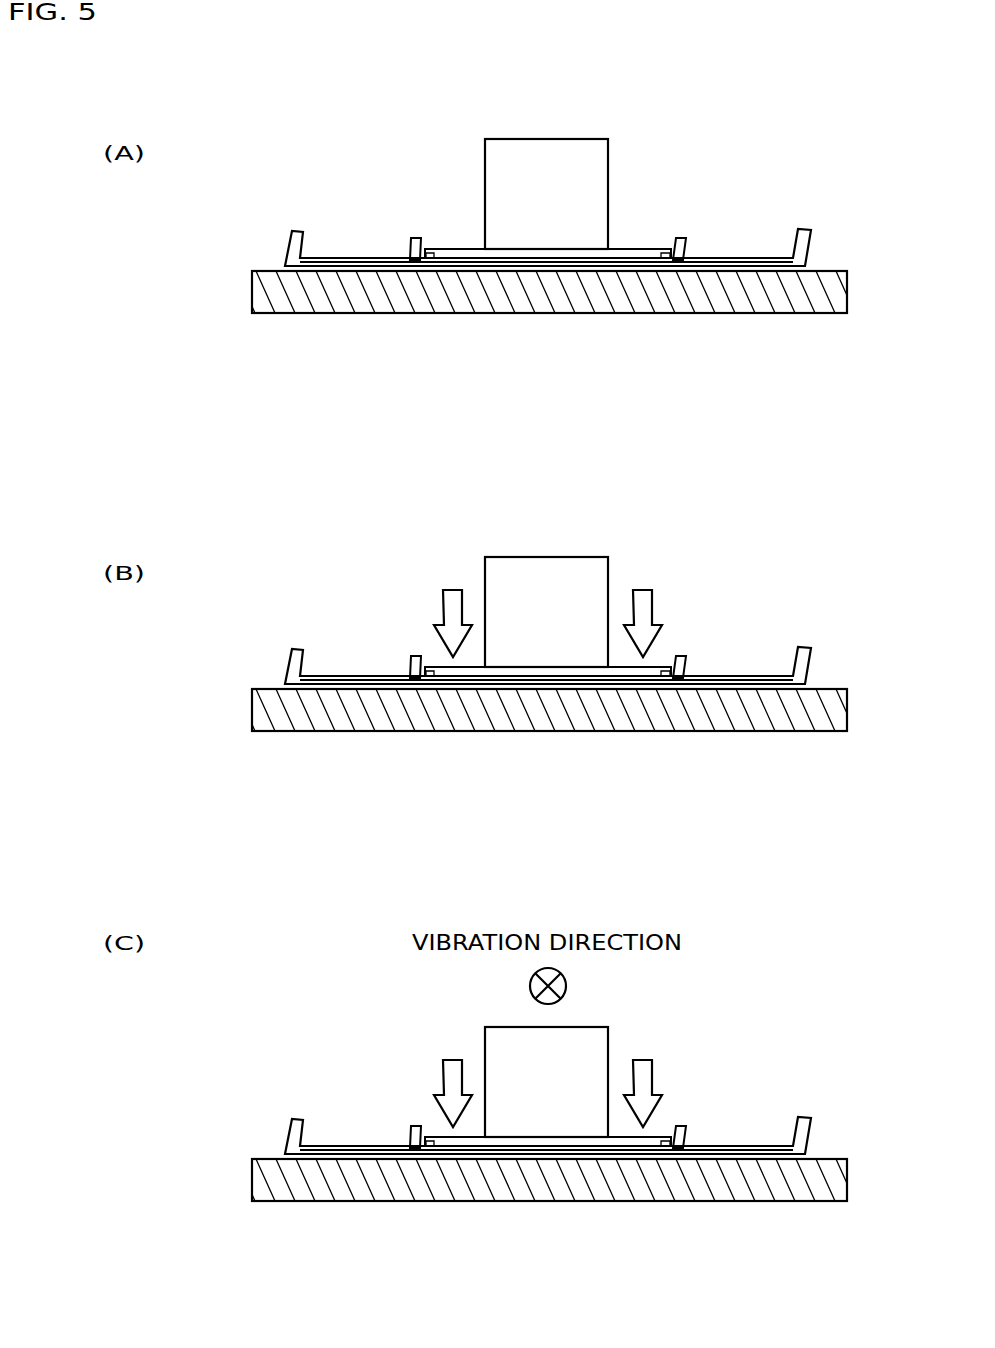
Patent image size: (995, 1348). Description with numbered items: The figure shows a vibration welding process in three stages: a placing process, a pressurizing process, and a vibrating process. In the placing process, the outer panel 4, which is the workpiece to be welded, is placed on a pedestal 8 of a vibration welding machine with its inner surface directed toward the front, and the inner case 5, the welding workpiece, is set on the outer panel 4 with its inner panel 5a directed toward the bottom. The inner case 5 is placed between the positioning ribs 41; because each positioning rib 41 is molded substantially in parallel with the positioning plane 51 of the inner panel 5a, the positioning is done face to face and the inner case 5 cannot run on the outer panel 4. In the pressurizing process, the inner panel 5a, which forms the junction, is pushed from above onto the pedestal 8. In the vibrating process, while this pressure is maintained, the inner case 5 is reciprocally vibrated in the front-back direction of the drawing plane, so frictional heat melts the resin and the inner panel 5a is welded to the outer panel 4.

The outer panel 4 is at (357, 258).
The positioning rib 41 is at (417, 237).
The inner case 5 is at (548, 139).
The inner panel 5a is at (555, 249).
The positioning plane 51 is at (427, 255).
The pedestal 8 is at (558, 313).